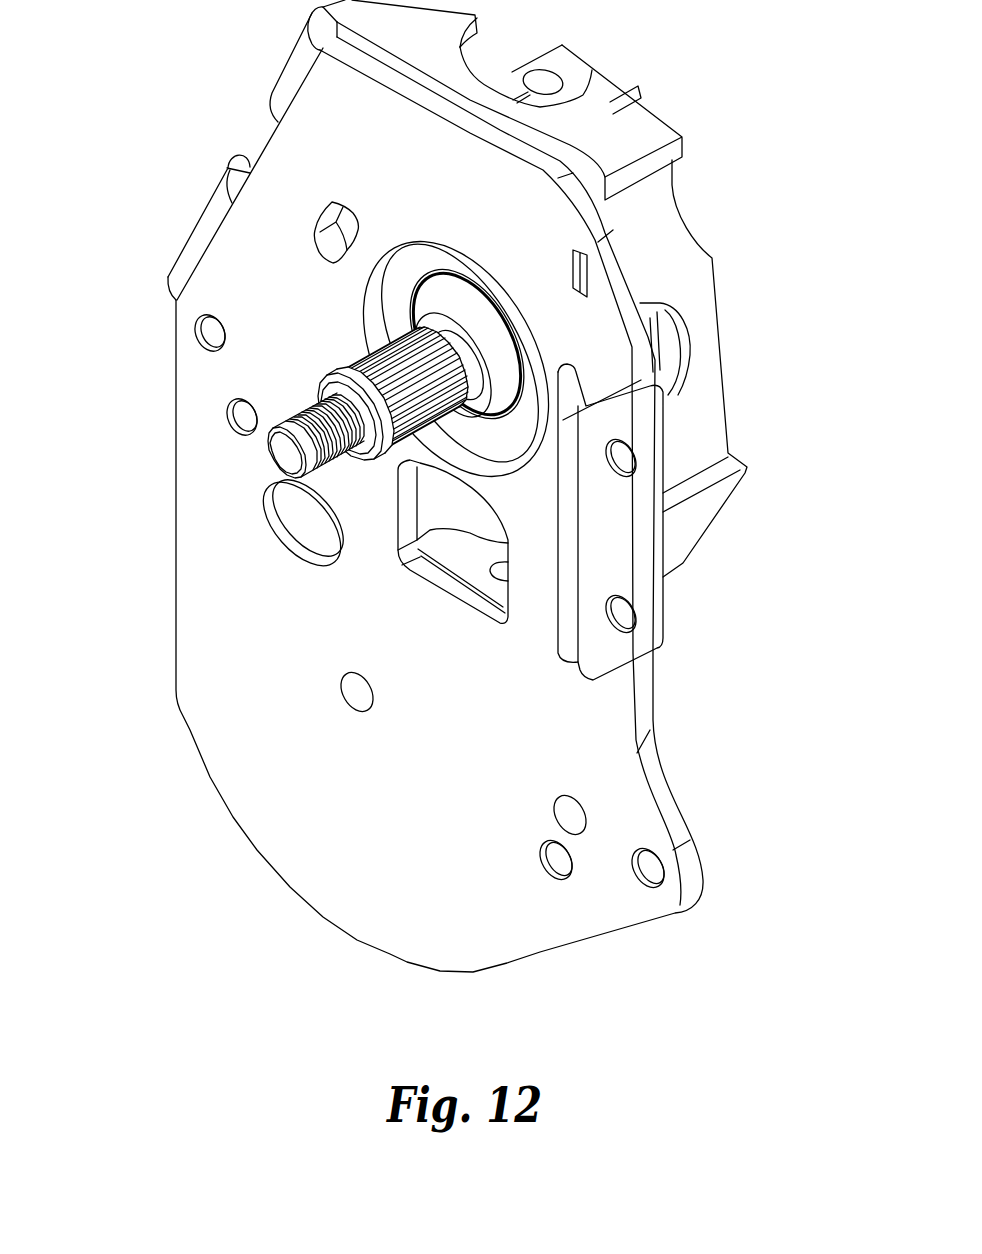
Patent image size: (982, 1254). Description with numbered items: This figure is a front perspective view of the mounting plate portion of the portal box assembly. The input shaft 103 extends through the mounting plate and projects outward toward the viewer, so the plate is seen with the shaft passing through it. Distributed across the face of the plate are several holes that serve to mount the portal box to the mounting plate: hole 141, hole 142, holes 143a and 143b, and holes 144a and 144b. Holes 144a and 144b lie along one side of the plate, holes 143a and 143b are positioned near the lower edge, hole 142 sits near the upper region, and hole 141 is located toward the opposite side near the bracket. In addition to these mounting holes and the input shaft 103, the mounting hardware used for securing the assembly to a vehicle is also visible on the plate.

The input shaft 103 is at (394, 447).
The hole 141 is at (568, 393).
The hole 142 is at (343, 220).
The hole 143a is at (650, 870).
The hole 143b is at (553, 863).
The hole 144a is at (213, 335).
The hole 144b is at (247, 423).